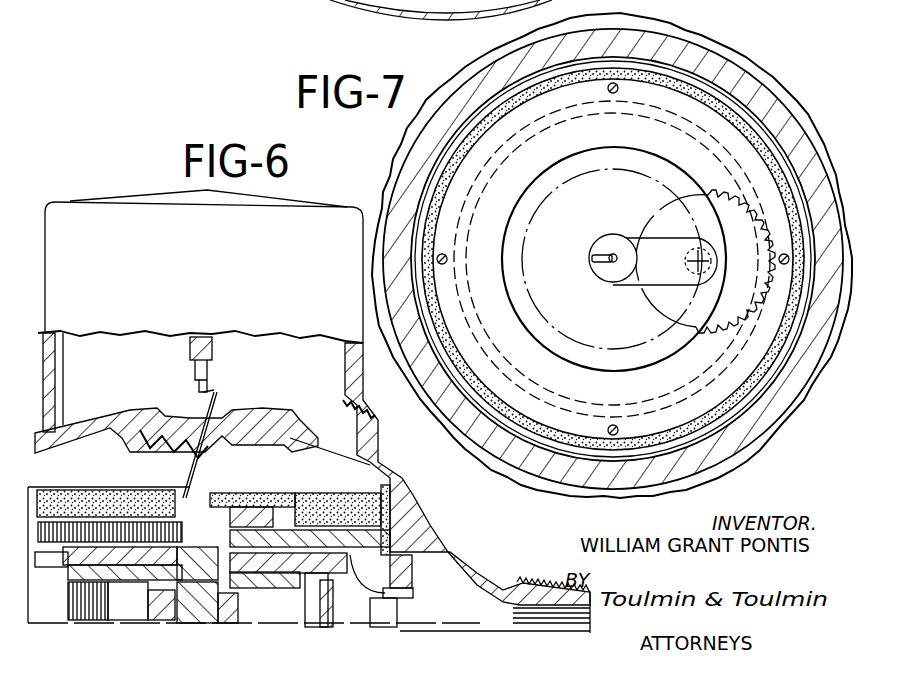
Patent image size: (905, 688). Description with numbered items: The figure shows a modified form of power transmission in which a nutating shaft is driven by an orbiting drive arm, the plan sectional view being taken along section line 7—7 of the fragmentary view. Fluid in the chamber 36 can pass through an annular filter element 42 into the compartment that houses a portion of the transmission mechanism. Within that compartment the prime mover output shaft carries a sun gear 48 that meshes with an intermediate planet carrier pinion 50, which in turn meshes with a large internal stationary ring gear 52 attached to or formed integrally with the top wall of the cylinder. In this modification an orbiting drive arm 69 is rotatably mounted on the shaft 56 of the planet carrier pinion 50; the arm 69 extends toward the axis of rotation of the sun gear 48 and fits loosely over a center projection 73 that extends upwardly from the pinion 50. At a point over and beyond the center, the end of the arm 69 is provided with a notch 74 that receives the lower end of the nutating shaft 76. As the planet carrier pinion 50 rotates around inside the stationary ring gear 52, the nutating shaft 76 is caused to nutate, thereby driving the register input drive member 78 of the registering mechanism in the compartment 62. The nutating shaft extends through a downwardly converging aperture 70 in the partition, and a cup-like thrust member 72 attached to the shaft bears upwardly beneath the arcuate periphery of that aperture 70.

In FIG. 6, the section line 7— 7 is at (415, 500).
In FIG. 6, the chamber 36 is at (418, 552).
In FIG. 6, the annular filter element 42 is at (405, 488).
In FIG. 6, the sun gear 48 is at (256, 494).
In FIG. 6, the planet carrier pinion 50 is at (403, 595).
In FIG. 7, the planet carrier pinion 50 is at (672, 328).
In FIG. 6, the stationary ring gear 52 is at (388, 538).
In FIG. 7, the stationary ring gear 52 is at (545, 389).
In FIG. 6, the shaft 56 is at (300, 492).
In FIG. 7, the shaft 56 is at (686, 262).
In FIG. 6, the compartment 62 is at (113, 374).
In FIG. 6, the orbiting drive arm 69 is at (272, 492).
In FIG. 7, the aperture 70 is at (634, 290).
In FIG. 6, the cup-like thrust member 72 is at (225, 418).
In FIG. 6, the center projection 73 is at (220, 495).
In FIG. 6, the notch 74 is at (178, 487).
In FIG. 6, the nutating shaft 76 is at (216, 390).
In FIG. 7, the nutating shaft 76 is at (605, 264).
In FIG. 6, the register input drive member 78 is at (198, 388).